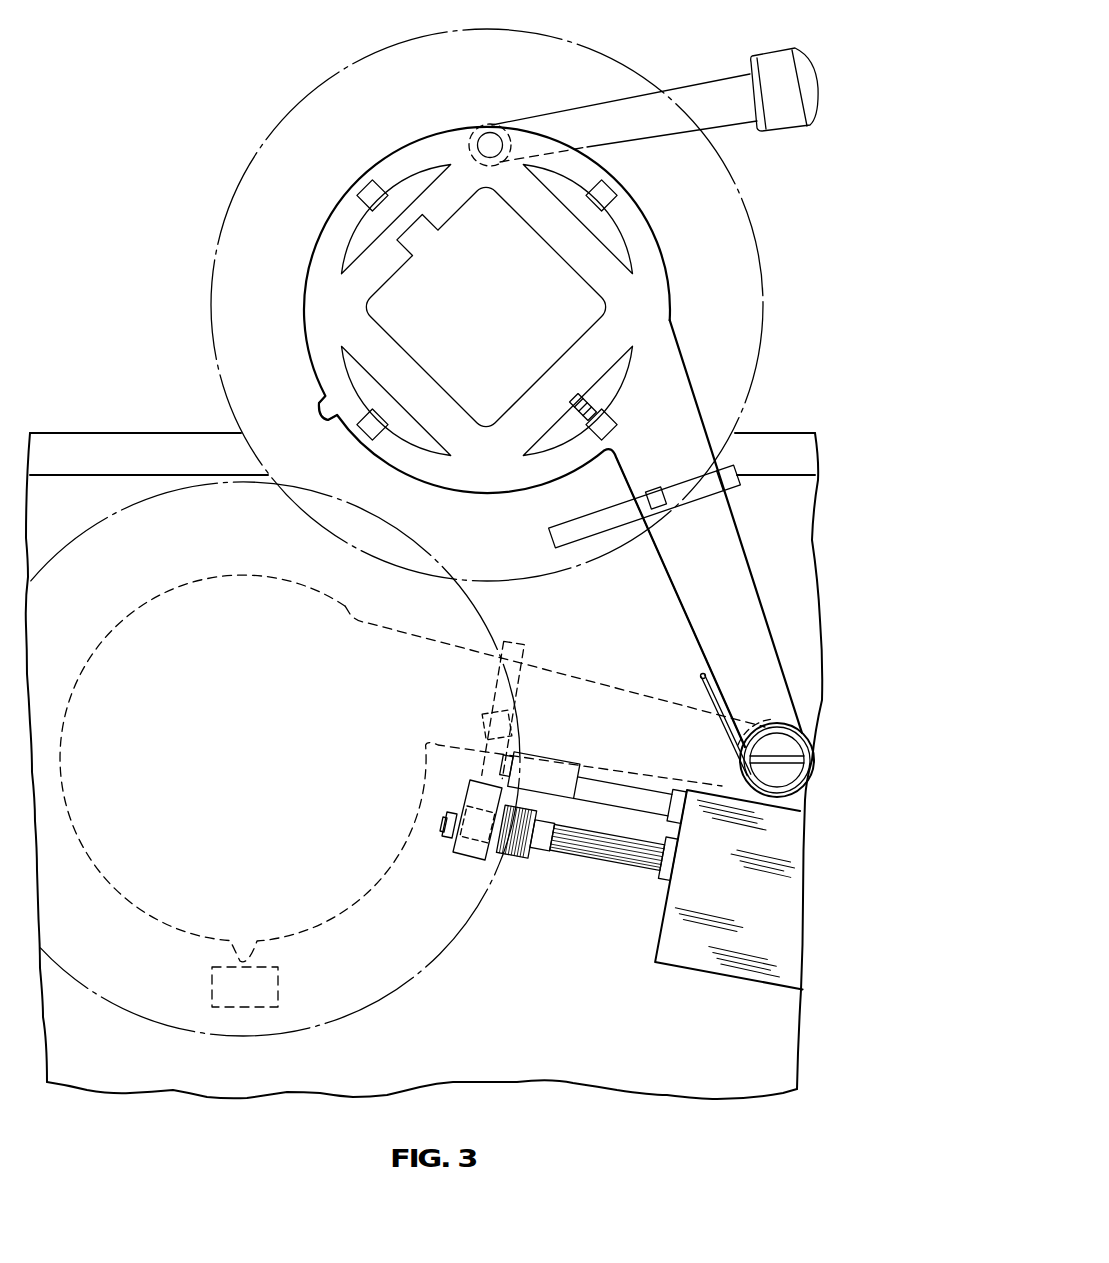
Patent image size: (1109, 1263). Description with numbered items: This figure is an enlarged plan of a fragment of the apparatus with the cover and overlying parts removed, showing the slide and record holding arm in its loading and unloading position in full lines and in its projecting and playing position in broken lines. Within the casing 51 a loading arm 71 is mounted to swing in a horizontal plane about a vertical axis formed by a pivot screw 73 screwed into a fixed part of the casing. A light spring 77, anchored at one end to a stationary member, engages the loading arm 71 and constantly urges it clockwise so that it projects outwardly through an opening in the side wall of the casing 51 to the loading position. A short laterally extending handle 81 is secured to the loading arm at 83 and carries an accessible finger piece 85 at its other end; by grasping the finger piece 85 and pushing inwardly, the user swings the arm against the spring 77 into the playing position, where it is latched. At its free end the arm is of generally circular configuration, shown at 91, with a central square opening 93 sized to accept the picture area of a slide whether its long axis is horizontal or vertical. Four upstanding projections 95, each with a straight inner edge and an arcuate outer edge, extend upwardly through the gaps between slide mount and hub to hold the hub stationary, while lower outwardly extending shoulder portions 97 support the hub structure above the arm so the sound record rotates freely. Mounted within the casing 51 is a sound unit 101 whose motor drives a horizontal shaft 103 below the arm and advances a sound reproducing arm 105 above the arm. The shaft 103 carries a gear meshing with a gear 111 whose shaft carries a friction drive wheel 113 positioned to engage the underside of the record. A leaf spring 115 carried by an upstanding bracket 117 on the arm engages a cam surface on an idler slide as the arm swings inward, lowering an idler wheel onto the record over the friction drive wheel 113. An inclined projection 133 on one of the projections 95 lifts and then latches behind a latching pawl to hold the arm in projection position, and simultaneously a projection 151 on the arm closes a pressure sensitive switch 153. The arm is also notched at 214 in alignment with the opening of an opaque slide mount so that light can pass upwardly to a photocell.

The casing 51 is at (777, 440).
The loading arm 71 is at (598, 675).
The pivot screw 73 is at (770, 740).
The spring 77 is at (726, 728).
The handle 81 is at (702, 84).
The handle attachment point 83 is at (490, 124).
The finger piece 85 is at (768, 55).
The circular end portion 91 is at (305, 328).
The square opening 93 is at (394, 336).
The projections 95 is at (413, 182).
The shoulder portions 97 is at (363, 191).
The sound unit 101 is at (711, 965).
The horizontal shaft 103 is at (608, 849).
The sound reproducing arm 105 is at (622, 790).
The gear 111 is at (521, 858).
The friction drive wheel 113 is at (470, 862).
The leaf spring 115 is at (571, 522).
The bracket 117 is at (742, 482).
The inclined projection 133 is at (580, 418).
The projection 151 is at (322, 412).
The pressure sensitive switch 153 is at (280, 983).
The notch 214 is at (414, 232).